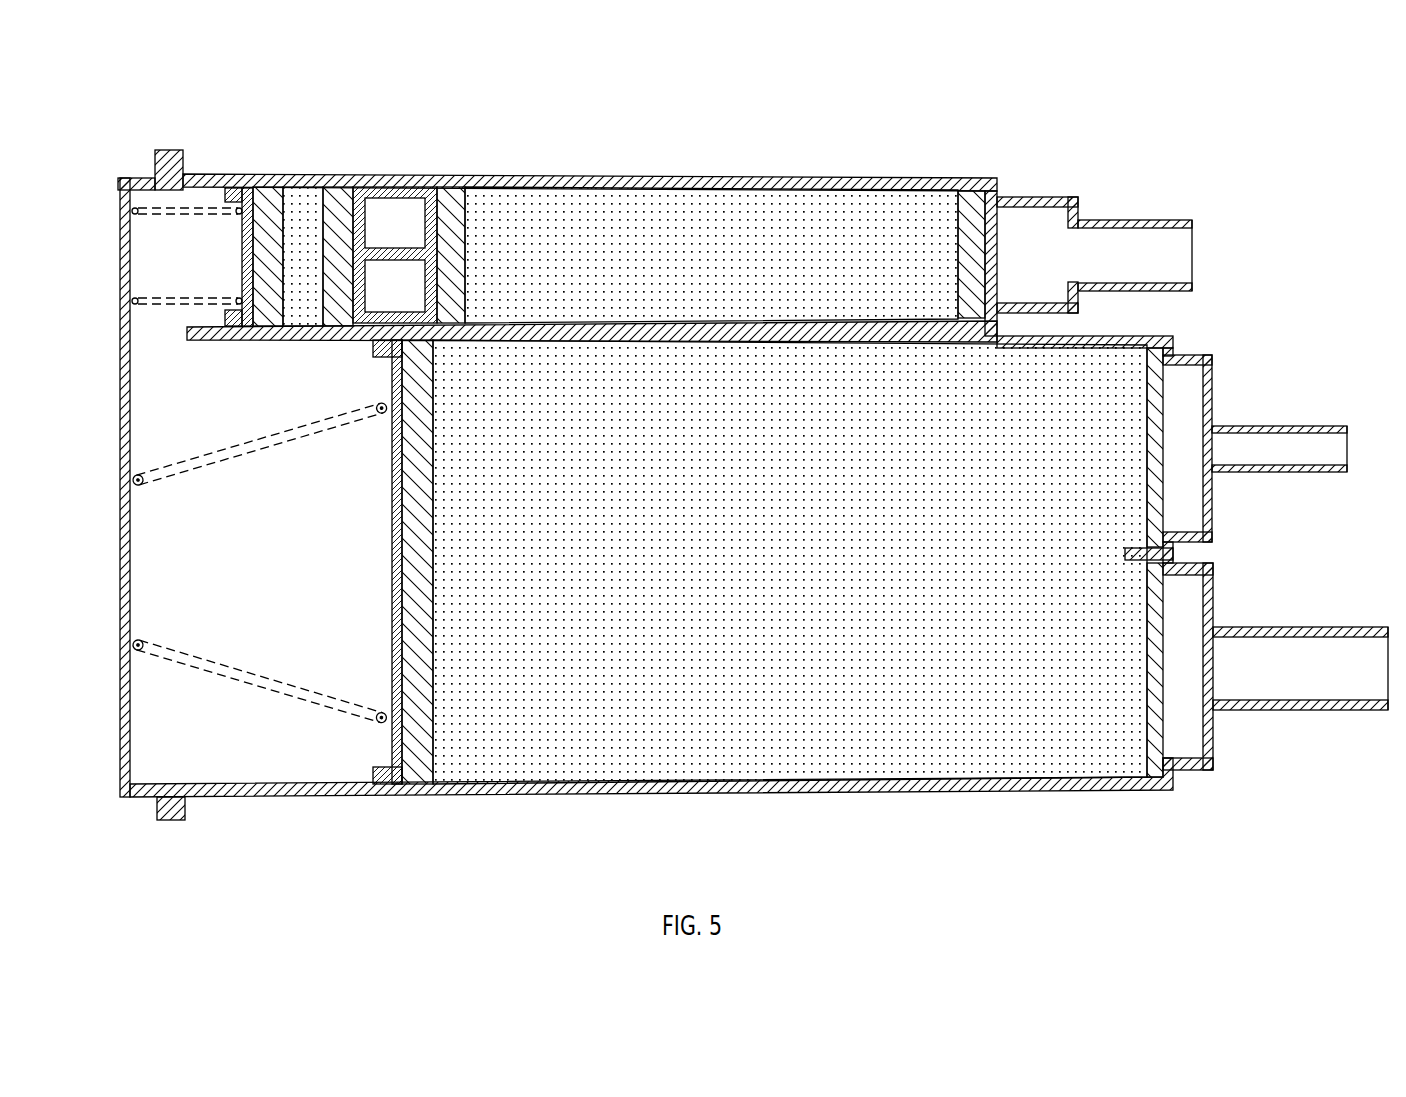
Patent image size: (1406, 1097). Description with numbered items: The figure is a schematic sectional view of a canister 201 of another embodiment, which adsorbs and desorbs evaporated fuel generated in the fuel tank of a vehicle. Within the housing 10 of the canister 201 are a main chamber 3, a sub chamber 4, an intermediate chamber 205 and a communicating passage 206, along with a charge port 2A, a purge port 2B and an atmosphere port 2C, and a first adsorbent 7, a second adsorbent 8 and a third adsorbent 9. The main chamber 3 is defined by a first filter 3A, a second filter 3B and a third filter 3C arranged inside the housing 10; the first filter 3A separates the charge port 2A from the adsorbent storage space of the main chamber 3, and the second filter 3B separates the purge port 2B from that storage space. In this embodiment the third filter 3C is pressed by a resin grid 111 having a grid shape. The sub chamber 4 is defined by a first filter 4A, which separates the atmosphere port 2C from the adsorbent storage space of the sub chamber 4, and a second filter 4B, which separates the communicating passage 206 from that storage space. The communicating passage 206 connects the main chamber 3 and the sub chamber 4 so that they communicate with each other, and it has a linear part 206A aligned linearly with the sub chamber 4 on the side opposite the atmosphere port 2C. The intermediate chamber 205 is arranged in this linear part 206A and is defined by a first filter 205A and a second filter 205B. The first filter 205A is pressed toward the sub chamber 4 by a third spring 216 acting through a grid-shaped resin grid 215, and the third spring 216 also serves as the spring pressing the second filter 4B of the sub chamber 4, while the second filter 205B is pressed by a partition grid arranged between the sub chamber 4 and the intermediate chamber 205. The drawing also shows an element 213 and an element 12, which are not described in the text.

The canister 201 is at (1112, 104).
The housing 10 is at (118, 191).
The sub chamber 4 is at (719, 177).
The first filter 4A is at (973, 242).
The second filter 4B is at (453, 253).
The second adsorbent 8 is at (820, 207).
The atmosphere port 2C is at (1140, 247).
The frame member 213 is at (427, 204).
The linear part 206A is at (392, 229).
The intermediate chamber 205 is at (233, 239).
The first filter 205A is at (267, 220).
The second filter 205B is at (340, 212).
The third adsorbent 9 is at (310, 305).
The communicating passage 206 is at (150, 234).
The resin grid 215 is at (247, 232).
The third spring 216 is at (155, 303).
The main chamber 3 is at (1026, 789).
The first filter 3A is at (1153, 668).
The second filter 3B is at (1155, 415).
The third filter 3C is at (428, 648).
The charge port 2A is at (1298, 673).
The purge port 2B is at (1287, 452).
The first adsorbent 7 is at (795, 717).
The resin grid 111 is at (395, 578).
The float arms 12 is at (178, 667).